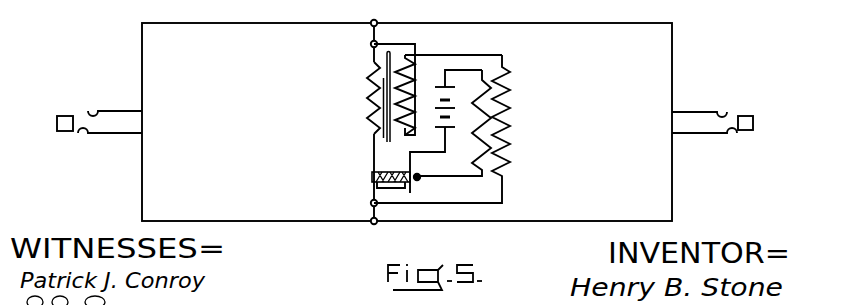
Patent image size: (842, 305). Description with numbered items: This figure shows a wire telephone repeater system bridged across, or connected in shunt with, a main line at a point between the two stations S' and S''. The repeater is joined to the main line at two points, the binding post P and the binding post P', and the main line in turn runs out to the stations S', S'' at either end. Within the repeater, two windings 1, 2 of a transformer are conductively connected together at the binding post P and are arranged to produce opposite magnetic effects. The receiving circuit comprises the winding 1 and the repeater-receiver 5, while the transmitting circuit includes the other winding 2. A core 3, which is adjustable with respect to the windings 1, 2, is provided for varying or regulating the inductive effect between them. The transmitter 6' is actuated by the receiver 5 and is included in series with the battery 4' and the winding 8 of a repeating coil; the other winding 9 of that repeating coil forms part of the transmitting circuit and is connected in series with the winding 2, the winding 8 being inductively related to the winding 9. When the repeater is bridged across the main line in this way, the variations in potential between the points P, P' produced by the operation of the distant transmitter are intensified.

The transformer winding 1 is at (383, 100).
The transformer winding 2 is at (403, 87).
The core 3 is at (384, 138).
The battery 4' is at (453, 112).
The repeater-receiver 5 is at (372, 176).
The transmitter 6' is at (424, 188).
The repeating coil winding 8 is at (488, 108).
The repeating coil winding 9 is at (497, 137).
The binding post P is at (381, 41).
The binding post P' is at (388, 179).
The station S' is at (74, 154).
The station S'' is at (734, 152).